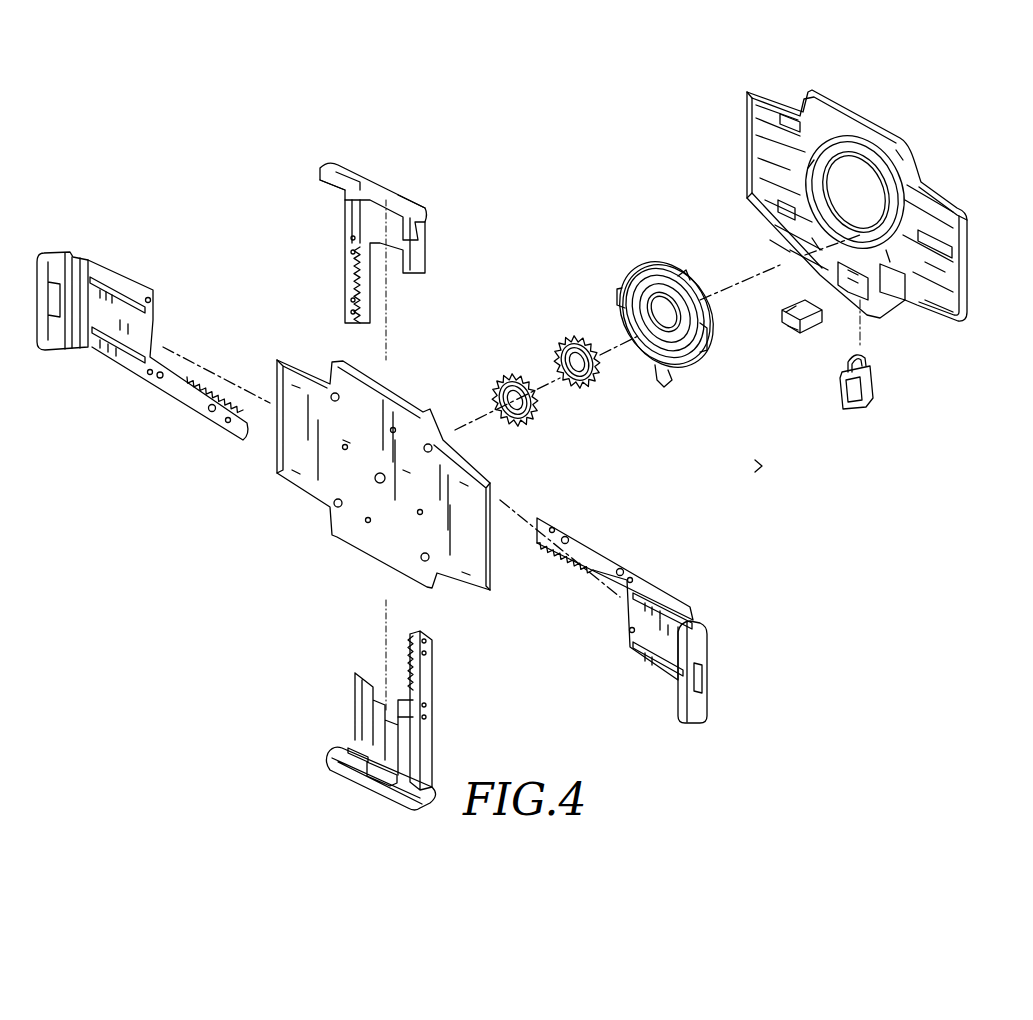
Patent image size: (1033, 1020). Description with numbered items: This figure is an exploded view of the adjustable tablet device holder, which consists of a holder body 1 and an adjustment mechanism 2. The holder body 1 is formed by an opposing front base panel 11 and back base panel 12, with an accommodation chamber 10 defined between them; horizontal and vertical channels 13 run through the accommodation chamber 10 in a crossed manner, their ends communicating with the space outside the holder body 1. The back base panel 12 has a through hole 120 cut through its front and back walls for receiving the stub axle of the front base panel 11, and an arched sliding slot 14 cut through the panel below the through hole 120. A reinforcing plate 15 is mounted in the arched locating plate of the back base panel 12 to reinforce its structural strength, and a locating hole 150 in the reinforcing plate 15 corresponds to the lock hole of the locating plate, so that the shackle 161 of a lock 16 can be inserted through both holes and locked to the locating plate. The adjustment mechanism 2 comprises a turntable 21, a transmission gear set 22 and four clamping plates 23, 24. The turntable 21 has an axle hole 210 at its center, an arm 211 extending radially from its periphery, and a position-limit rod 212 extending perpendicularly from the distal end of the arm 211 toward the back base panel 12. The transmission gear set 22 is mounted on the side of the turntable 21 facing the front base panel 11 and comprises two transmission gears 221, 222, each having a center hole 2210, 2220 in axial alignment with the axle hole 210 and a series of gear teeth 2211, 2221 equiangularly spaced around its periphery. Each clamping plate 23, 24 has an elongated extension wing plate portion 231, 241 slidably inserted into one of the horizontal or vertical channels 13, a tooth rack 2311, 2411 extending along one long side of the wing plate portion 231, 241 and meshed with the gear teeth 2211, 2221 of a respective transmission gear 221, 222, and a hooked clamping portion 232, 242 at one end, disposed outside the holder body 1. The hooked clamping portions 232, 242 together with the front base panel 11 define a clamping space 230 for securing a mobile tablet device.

The holder body 1 is at (968, 320).
The accommodation chamber 10 is at (856, 131).
The front base panel 11 is at (292, 452).
The back base panel 12 is at (948, 265).
The horizontal and vertical channels 13 is at (763, 156).
The arched sliding slot 14 is at (858, 298).
The reinforcing plate 15 is at (806, 322).
The locating hole 150 is at (803, 308).
The lock 16 is at (858, 405).
The shackle 161 is at (872, 374).
The through hole 120 is at (880, 203).
The adjustment mechanism 2 is at (727, 435).
The turntable 21 is at (710, 324).
The axle hole 210 is at (655, 298).
The arm 211 is at (657, 368).
The position-limit rod 212 is at (678, 378).
The transmission gear set 22 is at (467, 286).
The transmission gear 221 is at (492, 370).
The center hole 2210 is at (516, 408).
The gear teeth 2211 is at (507, 376).
The transmission gear 222 is at (548, 330).
The center hole 2220 is at (578, 370).
The gear teeth 2221 is at (578, 340).
The clamping plate 23 is at (103, 268).
The clamping space 230 is at (345, 746).
The elongated extension wing plate portion 231 is at (608, 562).
The tooth rack 2311 is at (560, 530).
The hooked clamping portion 232 is at (683, 706).
The clamping plate 24 is at (350, 222).
The elongated extension wing plate portion 241 is at (430, 645).
The tooth rack 2411 is at (418, 668).
The hooked clamping portion 242 is at (410, 790).